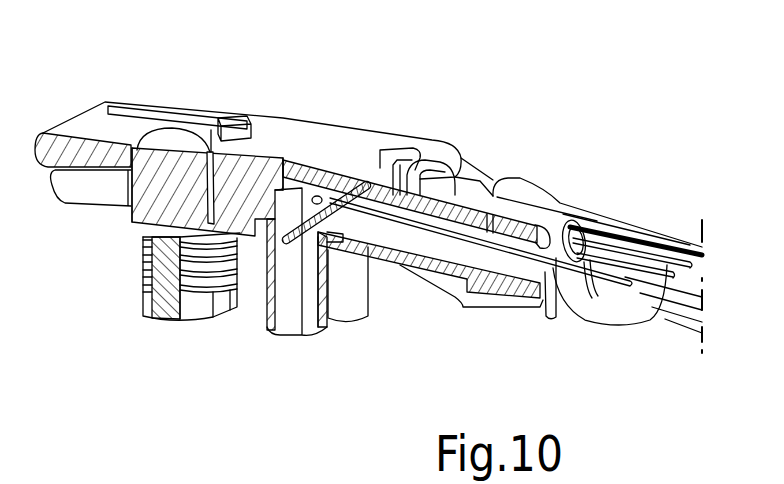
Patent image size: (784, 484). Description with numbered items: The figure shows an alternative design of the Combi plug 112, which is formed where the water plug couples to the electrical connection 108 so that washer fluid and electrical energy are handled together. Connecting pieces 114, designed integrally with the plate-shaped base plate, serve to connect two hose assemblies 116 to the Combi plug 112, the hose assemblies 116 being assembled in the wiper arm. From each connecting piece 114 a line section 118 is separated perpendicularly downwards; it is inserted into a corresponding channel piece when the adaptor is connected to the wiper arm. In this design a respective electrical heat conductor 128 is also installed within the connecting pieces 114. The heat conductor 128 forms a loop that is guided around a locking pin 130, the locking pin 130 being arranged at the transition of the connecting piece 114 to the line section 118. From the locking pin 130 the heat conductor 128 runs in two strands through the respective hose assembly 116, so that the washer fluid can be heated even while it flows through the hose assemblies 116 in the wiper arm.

The electrical connection 108 is at (182, 178).
The Combi plug 112 is at (421, 106).
The connecting pieces 114 is at (473, 177).
The hose assemblies 116 is at (607, 224).
The line section 118 is at (305, 290).
The electrical heat conductor 128 is at (633, 240).
The locking pin 130 is at (305, 217).